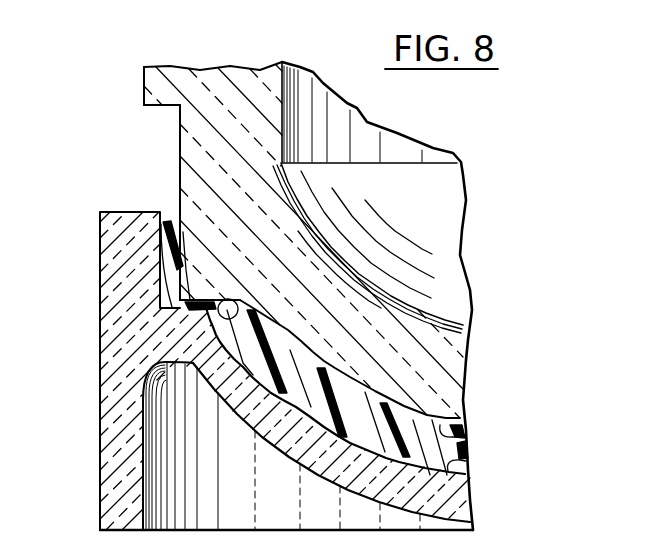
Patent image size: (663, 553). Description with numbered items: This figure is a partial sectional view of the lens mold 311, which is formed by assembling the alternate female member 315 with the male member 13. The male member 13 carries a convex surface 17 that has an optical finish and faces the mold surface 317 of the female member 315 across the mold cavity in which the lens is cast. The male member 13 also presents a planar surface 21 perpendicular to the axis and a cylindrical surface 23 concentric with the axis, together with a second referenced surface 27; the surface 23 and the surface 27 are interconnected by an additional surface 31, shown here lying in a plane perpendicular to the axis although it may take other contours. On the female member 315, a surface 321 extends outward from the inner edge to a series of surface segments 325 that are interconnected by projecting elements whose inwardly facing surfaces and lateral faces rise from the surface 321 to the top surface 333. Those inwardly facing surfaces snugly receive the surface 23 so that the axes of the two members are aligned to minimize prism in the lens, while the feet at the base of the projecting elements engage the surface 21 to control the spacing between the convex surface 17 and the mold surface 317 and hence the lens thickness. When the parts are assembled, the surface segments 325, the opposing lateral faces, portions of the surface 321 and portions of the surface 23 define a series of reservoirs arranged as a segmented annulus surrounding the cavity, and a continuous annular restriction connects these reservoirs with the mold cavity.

The male member 13 is at (478, 351).
The convex surface 17 is at (467, 429).
The surface 21 is at (247, 300).
The surface 23 is at (180, 157).
The surface 27 is at (143, 80).
The additional surface 31 is at (172, 108).
The lens mold 311 is at (477, 206).
The female member 315 is at (474, 505).
The mold surface 317 is at (469, 468).
The surface 321 is at (181, 310).
The surface segments 325 is at (160, 246).
The top surface 333 is at (112, 213).